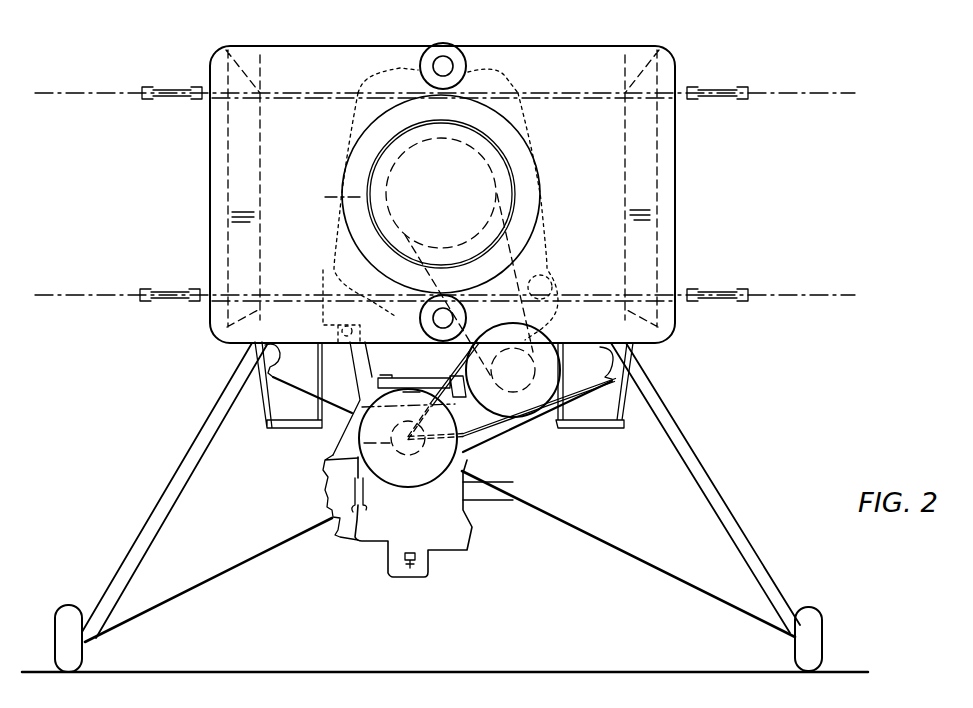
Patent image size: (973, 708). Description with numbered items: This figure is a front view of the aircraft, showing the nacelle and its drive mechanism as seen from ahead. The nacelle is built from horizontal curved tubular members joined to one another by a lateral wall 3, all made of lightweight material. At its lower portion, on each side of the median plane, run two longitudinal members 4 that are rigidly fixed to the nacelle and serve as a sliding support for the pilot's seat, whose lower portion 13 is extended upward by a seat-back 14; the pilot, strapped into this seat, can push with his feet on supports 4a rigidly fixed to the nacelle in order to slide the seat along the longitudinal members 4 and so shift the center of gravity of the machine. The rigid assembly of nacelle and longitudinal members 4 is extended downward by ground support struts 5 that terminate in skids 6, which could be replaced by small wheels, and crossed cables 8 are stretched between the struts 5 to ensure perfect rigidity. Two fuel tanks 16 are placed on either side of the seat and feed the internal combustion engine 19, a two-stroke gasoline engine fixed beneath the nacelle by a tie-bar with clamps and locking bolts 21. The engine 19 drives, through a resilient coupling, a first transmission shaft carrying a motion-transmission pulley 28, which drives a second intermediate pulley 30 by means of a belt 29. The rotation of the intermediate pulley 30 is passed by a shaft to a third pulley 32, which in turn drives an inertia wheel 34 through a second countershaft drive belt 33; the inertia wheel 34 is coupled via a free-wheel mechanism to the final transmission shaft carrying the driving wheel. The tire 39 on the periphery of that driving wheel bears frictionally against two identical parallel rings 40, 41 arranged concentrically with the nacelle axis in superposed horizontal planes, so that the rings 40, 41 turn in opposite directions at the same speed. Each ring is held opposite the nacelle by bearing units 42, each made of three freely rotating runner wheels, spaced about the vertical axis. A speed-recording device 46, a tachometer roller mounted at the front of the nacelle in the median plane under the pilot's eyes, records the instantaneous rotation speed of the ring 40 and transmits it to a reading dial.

The lateral wall 3 is at (676, 219).
The longitudinal members 4 is at (337, 325).
The supports 4a is at (594, 428).
The ground support struts 5 is at (675, 432).
The skids 6 is at (58, 630).
The crossed cables 8 is at (233, 570).
The lower portion 13 is at (388, 306).
The seat-back 14 is at (411, 273).
The fuel tanks 16 is at (243, 185).
The internal combustion engine 19 is at (450, 512).
The locking bolts 21 is at (383, 375).
The motion-transmission pulley 28 is at (355, 448).
The belt 29 is at (488, 441).
The intermediate pulley 30 is at (540, 338).
The third pulley 32 is at (558, 353).
The second countershaft drive belt 33 is at (507, 236).
The inertia wheel 34 is at (402, 152).
The tire 39 is at (357, 203).
The ring 40 is at (712, 92).
The ring 41 is at (712, 295).
The bearing units 42 is at (420, 311).
The device for recording the speed of the rings 46 is at (427, 50).